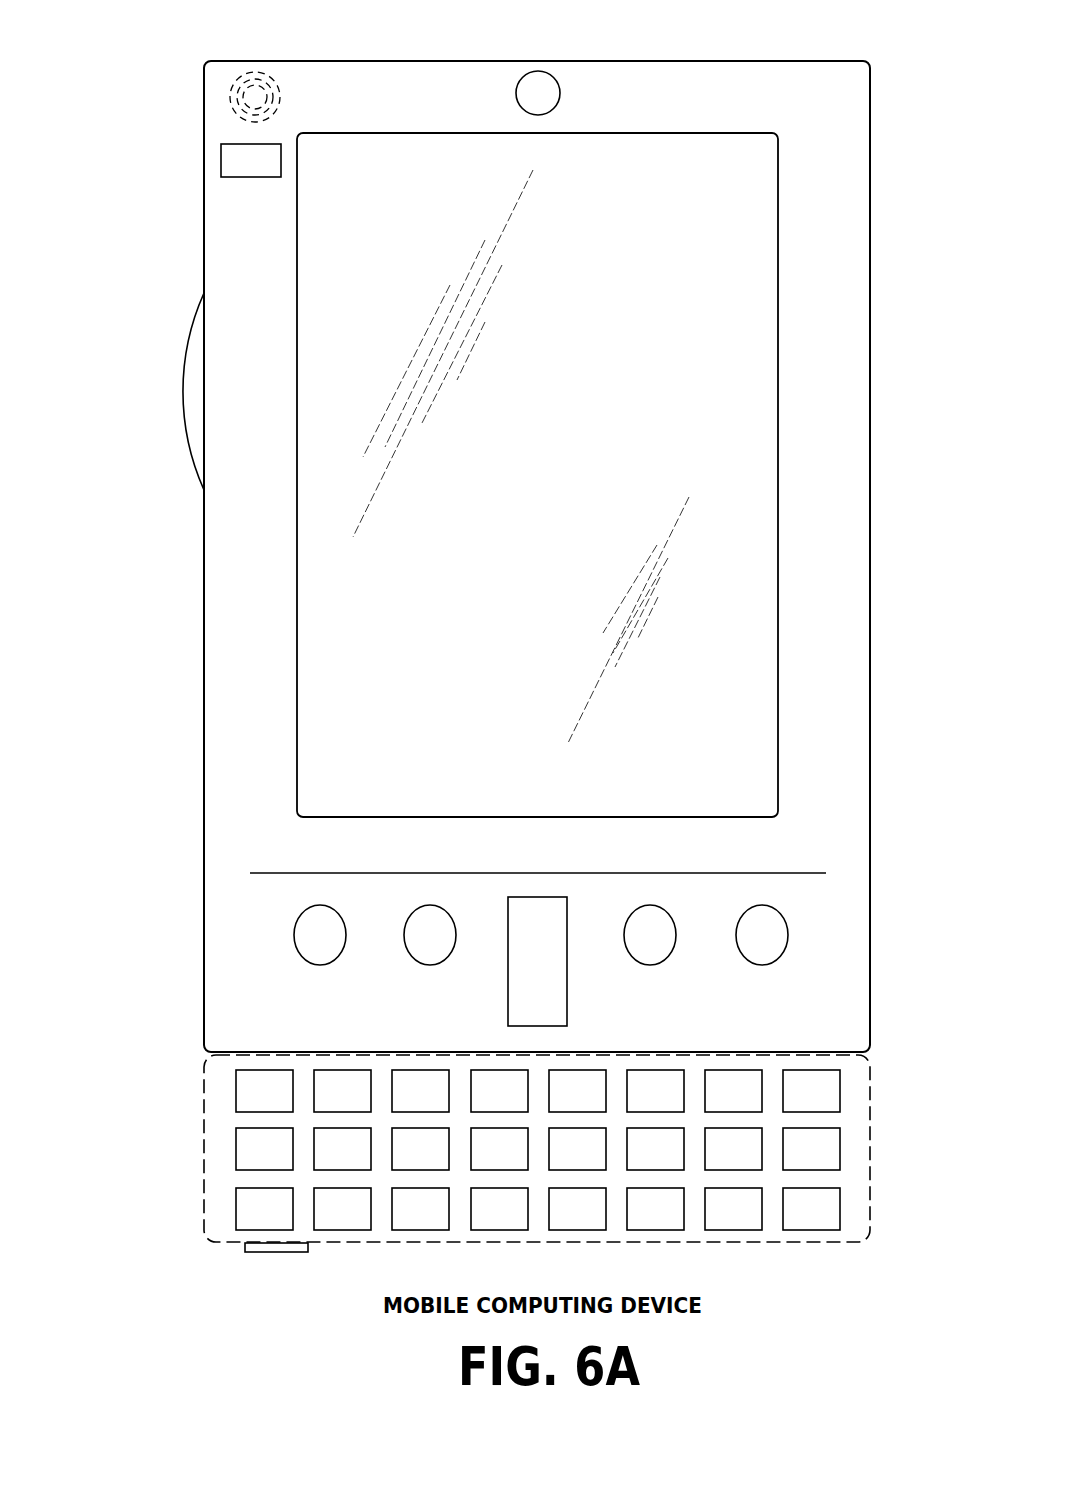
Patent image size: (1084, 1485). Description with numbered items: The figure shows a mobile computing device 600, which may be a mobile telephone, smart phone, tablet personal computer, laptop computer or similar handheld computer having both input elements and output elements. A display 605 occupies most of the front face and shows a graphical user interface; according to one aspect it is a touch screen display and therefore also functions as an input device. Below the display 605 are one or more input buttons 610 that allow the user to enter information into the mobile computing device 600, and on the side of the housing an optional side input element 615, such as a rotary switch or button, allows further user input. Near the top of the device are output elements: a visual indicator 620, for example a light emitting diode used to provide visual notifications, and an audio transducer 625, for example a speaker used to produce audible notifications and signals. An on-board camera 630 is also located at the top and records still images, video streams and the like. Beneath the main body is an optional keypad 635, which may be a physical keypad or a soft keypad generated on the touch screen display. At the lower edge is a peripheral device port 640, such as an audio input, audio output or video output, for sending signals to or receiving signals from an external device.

The mobile computing device 600 is at (836, 60).
The display 605 is at (320, 651).
The input buttons 610 is at (320, 966).
The side input element 615 is at (183, 398).
The visual indicator 620 is at (221, 160).
The audio transducer 625 is at (230, 97).
The on-board camera 630 is at (538, 71).
The keypad 635 is at (215, 1148).
The peripheral device port 640 is at (253, 1253).